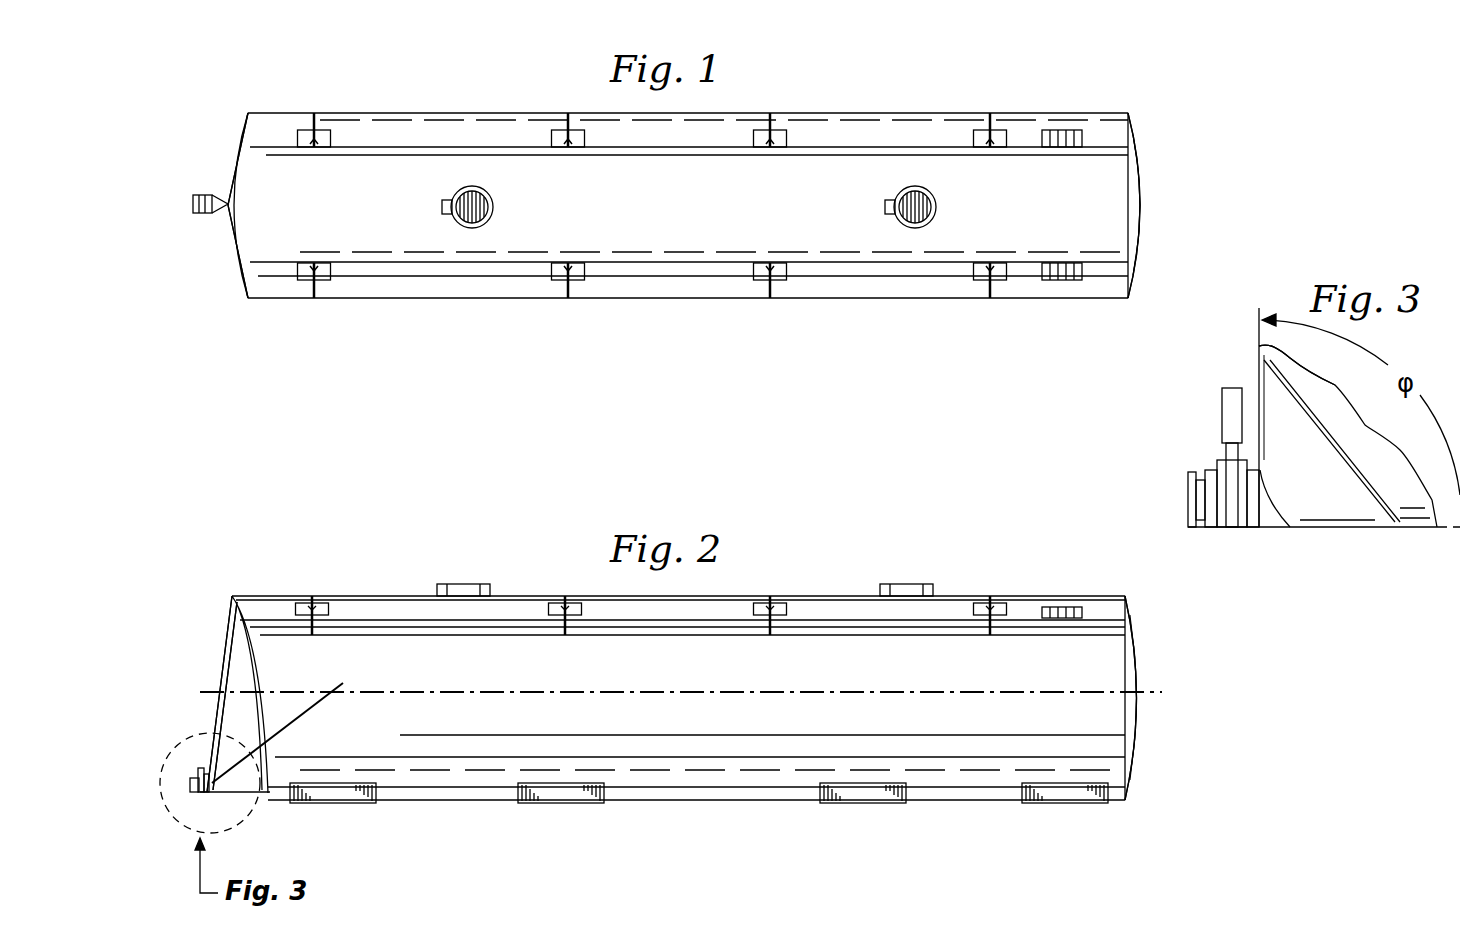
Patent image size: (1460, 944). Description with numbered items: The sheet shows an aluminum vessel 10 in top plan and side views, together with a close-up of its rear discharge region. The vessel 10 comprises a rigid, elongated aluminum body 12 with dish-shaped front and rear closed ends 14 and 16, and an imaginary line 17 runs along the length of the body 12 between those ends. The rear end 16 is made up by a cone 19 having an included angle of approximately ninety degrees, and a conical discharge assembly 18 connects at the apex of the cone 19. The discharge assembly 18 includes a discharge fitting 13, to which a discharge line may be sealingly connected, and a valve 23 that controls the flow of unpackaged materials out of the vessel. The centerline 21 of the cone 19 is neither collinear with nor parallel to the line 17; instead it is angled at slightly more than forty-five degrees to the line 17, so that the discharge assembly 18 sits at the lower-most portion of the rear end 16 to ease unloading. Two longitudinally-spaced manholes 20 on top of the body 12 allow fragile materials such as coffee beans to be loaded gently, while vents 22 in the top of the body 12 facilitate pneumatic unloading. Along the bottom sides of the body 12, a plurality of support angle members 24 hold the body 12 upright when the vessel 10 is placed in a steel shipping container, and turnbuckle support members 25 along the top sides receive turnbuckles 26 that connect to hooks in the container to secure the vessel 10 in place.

In FIG. 1, the aluminum vessel 10 is at (455, 96).
In FIG. 2, the aluminum vessel 10 is at (377, 572).
In FIG. 1, the aluminum body 12 is at (672, 218).
In FIG. 2, the aluminum body 12 is at (672, 678).
In FIG. 1, the discharge fitting 13 is at (193, 205).
In FIG. 2, the discharge fitting 13 is at (198, 792).
In FIG. 3, the discharge fitting 13 is at (1210, 528).
In FIG. 1, the front closed end 14 is at (1140, 134).
In FIG. 2, the front closed end 14 is at (1140, 635).
In FIG. 1, the rear closed end 16 is at (228, 165).
In FIG. 2, the rear closed end 16 is at (228, 618).
In FIG. 3, the rear closed end 16 is at (1252, 370).
In FIG. 2, the imaginary line 17 is at (425, 690).
In FIG. 2, the conical discharge assembly 18 is at (228, 796).
In FIG. 3, the conical discharge assembly 18 is at (1335, 528).
In FIG. 2, the cone 19 is at (218, 666).
In FIG. 3, the cone 19 is at (1296, 372).
In FIG. 1, the manholes 20 is at (492, 200).
In FIG. 2, the manholes 20 is at (462, 584).
In FIG. 2, the centerline of the cone 21 is at (300, 720).
In FIG. 1, the vents 22 is at (1066, 130).
In FIG. 2, the vents 22 is at (1064, 618).
In FIG. 2, the valve 23 is at (200, 767).
In FIG. 3, the valve 23 is at (1222, 420).
In FIG. 2, the support angle members 24 is at (335, 800).
In FIG. 1, the turnbuckle support members 25 is at (331, 138).
In FIG. 2, the turnbuckle support members 25 is at (295, 608).
In FIG. 1, the turnbuckles 26 is at (312, 112).
In FIG. 2, the turnbuckles 26 is at (316, 635).